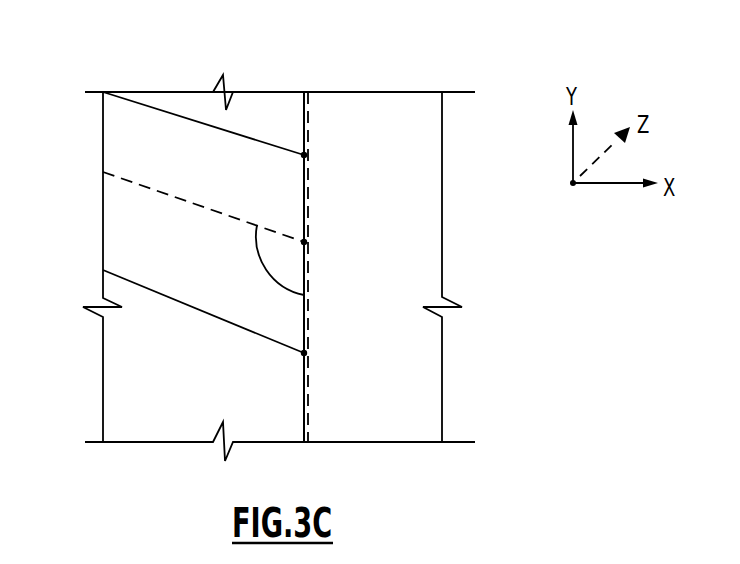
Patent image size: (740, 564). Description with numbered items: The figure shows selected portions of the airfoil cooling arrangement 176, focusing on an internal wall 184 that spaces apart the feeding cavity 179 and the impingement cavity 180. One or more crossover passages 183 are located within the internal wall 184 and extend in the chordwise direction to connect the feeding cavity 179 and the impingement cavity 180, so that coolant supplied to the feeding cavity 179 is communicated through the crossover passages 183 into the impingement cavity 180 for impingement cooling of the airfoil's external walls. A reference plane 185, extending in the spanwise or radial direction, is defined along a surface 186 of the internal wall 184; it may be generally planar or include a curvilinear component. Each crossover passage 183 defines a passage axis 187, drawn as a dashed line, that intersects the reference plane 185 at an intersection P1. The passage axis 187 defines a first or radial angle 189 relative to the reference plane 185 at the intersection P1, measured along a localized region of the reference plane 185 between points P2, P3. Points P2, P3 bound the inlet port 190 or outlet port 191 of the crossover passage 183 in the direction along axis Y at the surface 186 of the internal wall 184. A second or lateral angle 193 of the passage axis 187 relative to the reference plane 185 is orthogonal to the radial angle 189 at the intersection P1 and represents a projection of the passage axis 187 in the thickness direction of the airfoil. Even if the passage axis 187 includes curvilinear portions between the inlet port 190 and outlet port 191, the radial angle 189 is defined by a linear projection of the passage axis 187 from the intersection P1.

The panel assembly 176 is at (113, 58).
The crossover passage 183 is at (160, 106).
The internal wall 184 is at (249, 107).
The surface of the internal wall 186 is at (306, 111).
The passage axis 187 is at (127, 176).
The radial angle 189 is at (203, 289).
The lateral angle 193 is at (263, 257).
The inlet port 190 is at (362, 167).
The outlet port 191 is at (309, 229).
The reference plane 185 is at (309, 302).
The feeding cavity 179 is at (396, 267).
The impingement cavity 180 is at (417, 130).
The intersection P1 is at (306, 244).
The point P2 is at (306, 355).
The point P3 is at (306, 157).